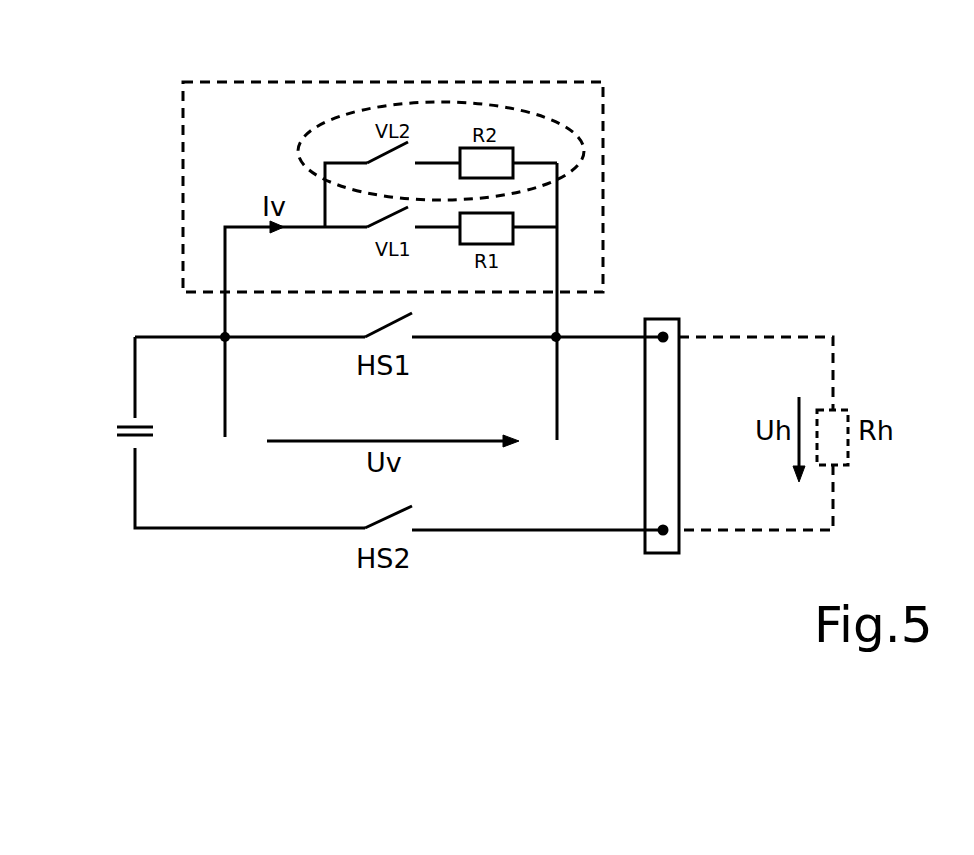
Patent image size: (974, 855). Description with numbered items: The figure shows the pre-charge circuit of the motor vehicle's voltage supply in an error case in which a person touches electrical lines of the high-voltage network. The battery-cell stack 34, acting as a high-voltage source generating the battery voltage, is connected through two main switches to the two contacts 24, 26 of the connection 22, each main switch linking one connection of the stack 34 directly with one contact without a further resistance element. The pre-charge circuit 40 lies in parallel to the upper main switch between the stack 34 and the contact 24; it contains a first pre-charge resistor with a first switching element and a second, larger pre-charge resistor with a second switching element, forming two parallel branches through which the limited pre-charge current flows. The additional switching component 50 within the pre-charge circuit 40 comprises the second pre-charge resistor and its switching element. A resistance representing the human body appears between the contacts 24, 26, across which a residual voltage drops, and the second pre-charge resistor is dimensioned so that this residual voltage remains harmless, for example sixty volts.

The connection 22 is at (670, 318).
The contact 24 is at (663, 337).
The contact 26 is at (663, 530).
The battery-cell stack 34 is at (125, 424).
The pre-charge circuit 40 is at (603, 210).
The switching component 50 is at (583, 152).